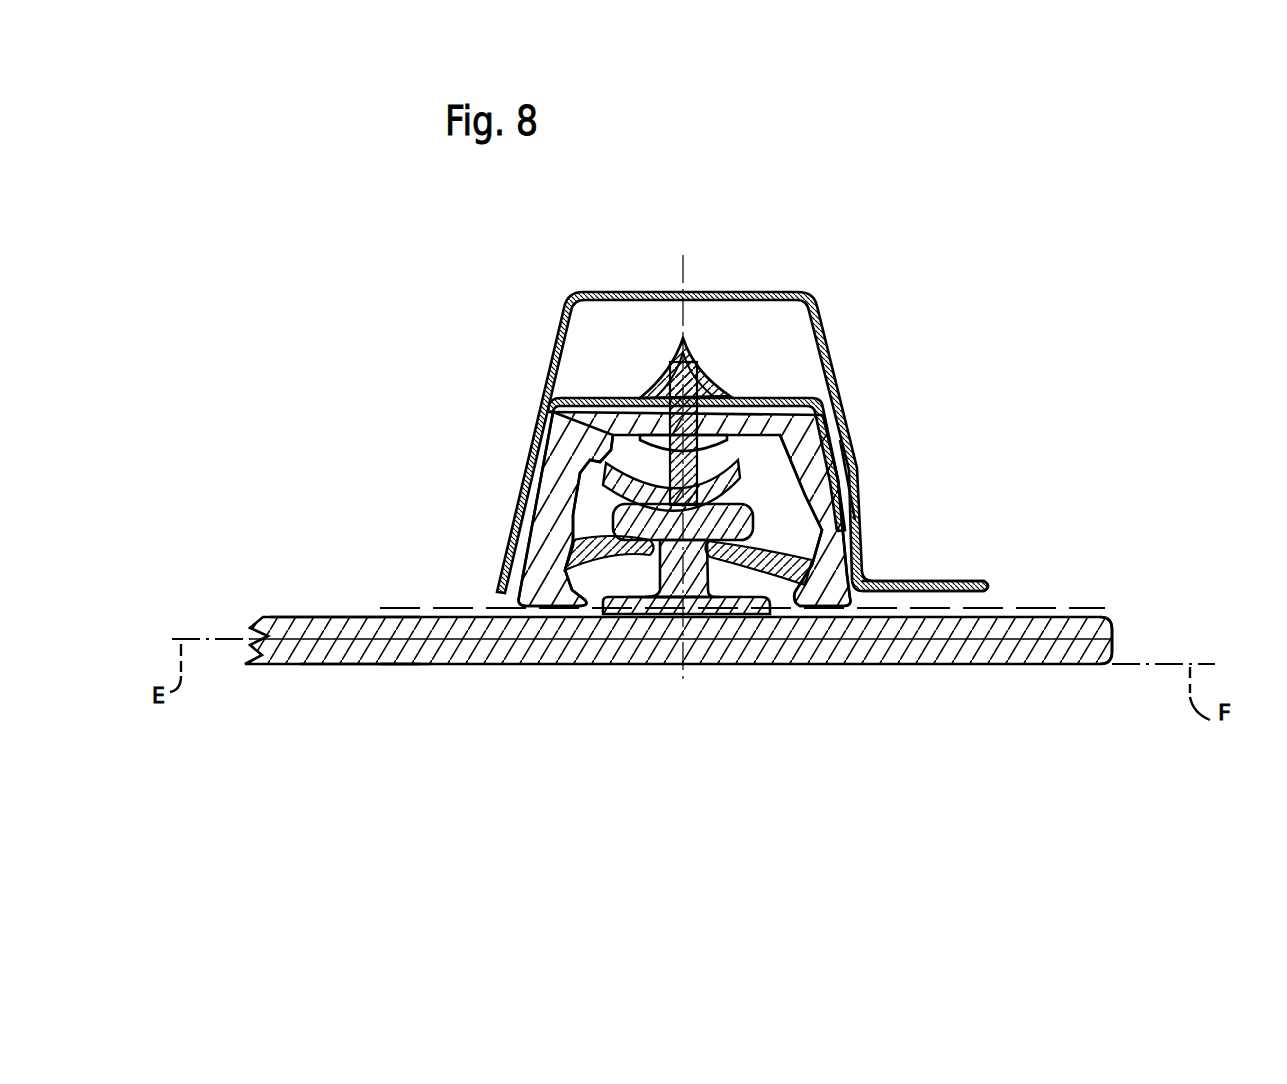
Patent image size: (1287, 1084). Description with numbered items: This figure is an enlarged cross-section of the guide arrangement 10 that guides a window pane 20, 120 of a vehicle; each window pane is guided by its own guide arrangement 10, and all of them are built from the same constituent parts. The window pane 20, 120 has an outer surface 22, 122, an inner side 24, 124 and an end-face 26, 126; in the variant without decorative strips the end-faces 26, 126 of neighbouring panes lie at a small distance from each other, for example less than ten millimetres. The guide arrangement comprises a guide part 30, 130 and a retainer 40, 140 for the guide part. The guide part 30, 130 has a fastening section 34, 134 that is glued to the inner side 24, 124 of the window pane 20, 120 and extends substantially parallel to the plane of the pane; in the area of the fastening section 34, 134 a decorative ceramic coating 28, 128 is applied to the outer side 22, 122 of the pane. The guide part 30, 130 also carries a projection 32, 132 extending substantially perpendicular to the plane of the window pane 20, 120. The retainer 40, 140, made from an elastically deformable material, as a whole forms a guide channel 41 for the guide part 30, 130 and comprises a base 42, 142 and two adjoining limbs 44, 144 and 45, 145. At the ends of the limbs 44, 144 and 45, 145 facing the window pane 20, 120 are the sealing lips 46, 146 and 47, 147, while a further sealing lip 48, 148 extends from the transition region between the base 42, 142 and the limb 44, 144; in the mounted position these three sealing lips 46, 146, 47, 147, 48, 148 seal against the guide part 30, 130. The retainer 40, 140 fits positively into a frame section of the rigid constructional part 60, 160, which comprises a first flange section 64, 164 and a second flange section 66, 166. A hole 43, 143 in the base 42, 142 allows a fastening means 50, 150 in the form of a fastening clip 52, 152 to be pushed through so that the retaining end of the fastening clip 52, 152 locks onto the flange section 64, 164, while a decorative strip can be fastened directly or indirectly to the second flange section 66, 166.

The guide arrangement 10 is at (472, 278).
The window pane 20 is at (678, 682).
The window pane 120 is at (955, 652).
The outer surface 22 is at (360, 708).
The outer surface 122 is at (357, 666).
The inner side 24 is at (325, 561).
The inner surface 124 is at (320, 611).
The end-face 26 is at (1171, 619).
The end-face 126 is at (1114, 638).
The decorative ceramic coating 28 is at (432, 634).
The decorative coating 128 is at (387, 612).
The guide part 30 is at (743, 477).
The guide part 130 is at (762, 513).
The projection 32 is at (528, 525).
The projection 132 is at (607, 512).
The fastening section 34 is at (688, 673).
The fastening section 134 is at (738, 600).
The retainer 40 is at (692, 539).
The retainer 140 is at (765, 453).
The guide channel 41 is at (640, 600).
The base 42 is at (800, 349).
The base 142 is at (758, 400).
The hole 43 is at (633, 373).
The hole 143 is at (630, 410).
The limb 44 is at (516, 502).
The limb 144 is at (553, 473).
The limb 45 is at (880, 510).
The limb 145 is at (824, 537).
The sealing lip 46 is at (613, 637).
The sealing lip 146 is at (645, 550).
The sealing lip 47 is at (787, 635).
The sealing lip 147 is at (790, 590).
The sealing lip 48 is at (905, 480).
The sealing lip 148 is at (853, 468).
The fastening means 50 is at (792, 313).
The fastening unit 150 is at (709, 360).
The fastening clip 52 is at (658, 355).
The fastening clip 152 is at (666, 355).
The rigid constructional part 60 is at (700, 442).
The rigid constructional part 160 is at (542, 364).
The first flange section 64 is at (752, 439).
The flange section 164 is at (790, 395).
The second flange section 66 is at (989, 554).
The flange section 166 is at (982, 580).